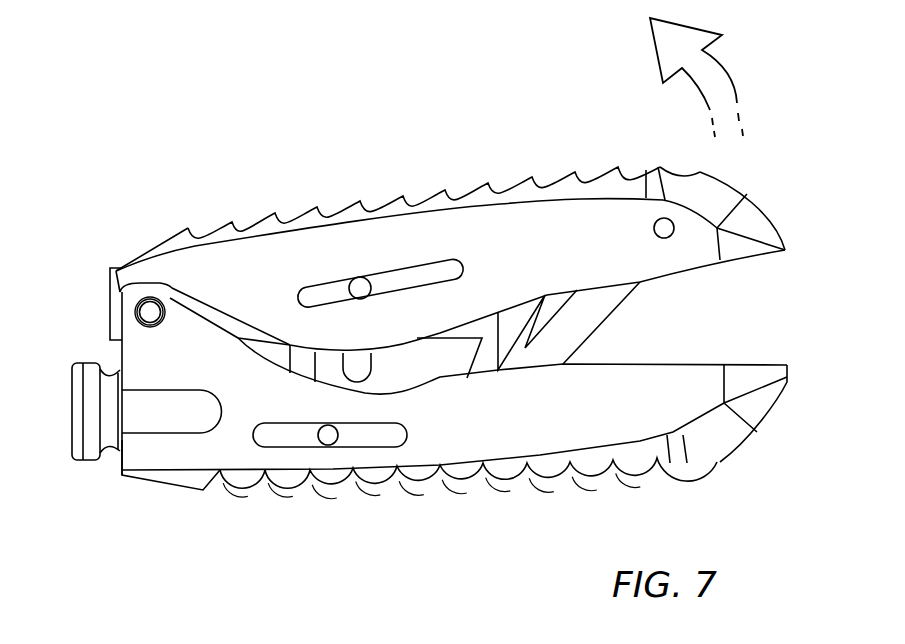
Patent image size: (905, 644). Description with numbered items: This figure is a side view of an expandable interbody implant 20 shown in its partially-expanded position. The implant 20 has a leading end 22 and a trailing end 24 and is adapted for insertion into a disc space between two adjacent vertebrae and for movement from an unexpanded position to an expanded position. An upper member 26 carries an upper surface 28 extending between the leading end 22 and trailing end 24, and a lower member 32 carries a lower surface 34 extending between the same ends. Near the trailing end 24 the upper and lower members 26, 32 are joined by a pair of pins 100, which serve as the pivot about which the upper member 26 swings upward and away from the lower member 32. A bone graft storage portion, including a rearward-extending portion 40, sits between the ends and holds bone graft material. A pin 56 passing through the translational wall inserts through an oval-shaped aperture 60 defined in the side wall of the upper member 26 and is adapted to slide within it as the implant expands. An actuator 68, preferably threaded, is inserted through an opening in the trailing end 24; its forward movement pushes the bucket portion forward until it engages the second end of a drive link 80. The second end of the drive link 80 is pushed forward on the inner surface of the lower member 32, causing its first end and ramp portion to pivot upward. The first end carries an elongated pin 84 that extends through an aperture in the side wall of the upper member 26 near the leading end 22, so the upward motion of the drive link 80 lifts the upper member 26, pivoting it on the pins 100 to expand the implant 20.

The expandable interbody implant 20 is at (217, 128).
The leading end 22 is at (782, 236).
The trailing end 24 is at (122, 465).
The upper member 26 is at (198, 273).
The upper surface 28 is at (517, 186).
The lower member 32 is at (225, 450).
The lower surface 34 is at (363, 472).
The rearward-extending portion 40 is at (112, 308).
The pin 56 is at (357, 287).
The oval-shaped aperture 60 is at (418, 277).
The actuator 68 is at (93, 393).
The drive link 80 is at (587, 320).
The elongated pin 84 is at (672, 232).
The pins 100 is at (149, 310).